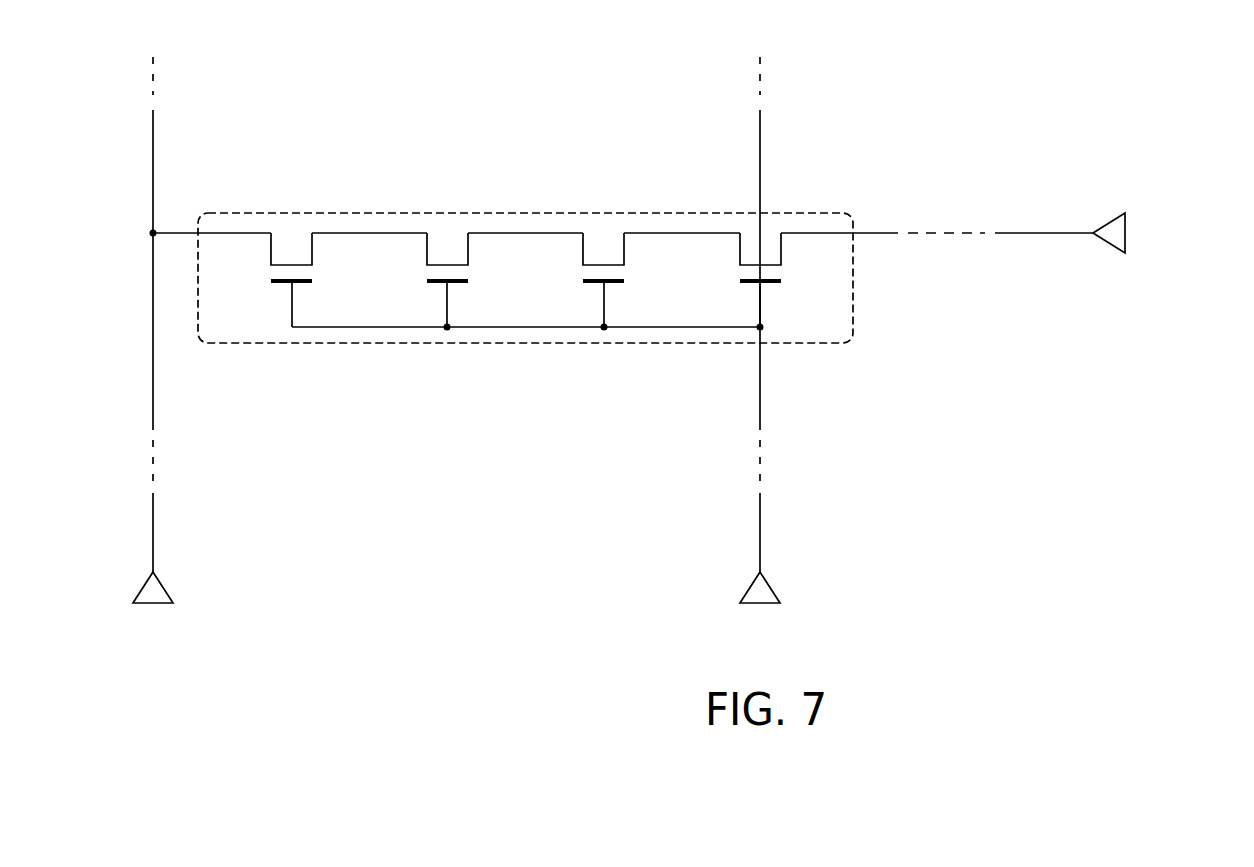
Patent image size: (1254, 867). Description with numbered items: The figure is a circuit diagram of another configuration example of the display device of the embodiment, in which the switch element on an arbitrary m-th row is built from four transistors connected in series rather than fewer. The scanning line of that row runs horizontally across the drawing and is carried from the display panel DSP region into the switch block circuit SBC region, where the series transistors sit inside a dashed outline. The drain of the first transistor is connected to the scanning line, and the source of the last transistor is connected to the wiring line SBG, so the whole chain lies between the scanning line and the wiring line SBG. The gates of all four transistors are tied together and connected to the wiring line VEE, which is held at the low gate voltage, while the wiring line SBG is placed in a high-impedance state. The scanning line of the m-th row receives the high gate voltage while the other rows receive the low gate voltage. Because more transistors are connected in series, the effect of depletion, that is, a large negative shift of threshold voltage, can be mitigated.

The display panel DSP is at (812, 77).
The switch block circuit SBC is at (929, 77).
The wiring line SBG is at (155, 528).
The wiring line VEE is at (762, 528).